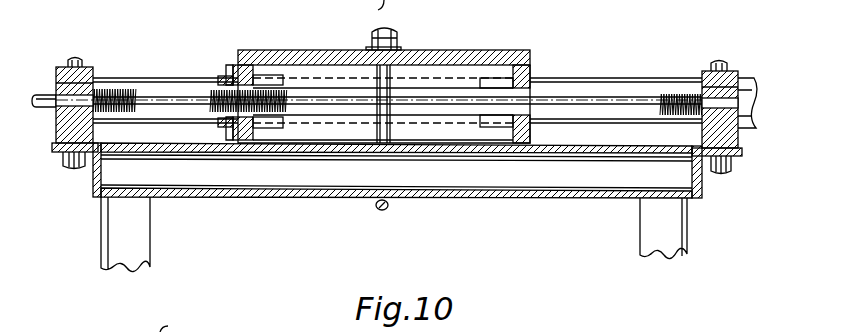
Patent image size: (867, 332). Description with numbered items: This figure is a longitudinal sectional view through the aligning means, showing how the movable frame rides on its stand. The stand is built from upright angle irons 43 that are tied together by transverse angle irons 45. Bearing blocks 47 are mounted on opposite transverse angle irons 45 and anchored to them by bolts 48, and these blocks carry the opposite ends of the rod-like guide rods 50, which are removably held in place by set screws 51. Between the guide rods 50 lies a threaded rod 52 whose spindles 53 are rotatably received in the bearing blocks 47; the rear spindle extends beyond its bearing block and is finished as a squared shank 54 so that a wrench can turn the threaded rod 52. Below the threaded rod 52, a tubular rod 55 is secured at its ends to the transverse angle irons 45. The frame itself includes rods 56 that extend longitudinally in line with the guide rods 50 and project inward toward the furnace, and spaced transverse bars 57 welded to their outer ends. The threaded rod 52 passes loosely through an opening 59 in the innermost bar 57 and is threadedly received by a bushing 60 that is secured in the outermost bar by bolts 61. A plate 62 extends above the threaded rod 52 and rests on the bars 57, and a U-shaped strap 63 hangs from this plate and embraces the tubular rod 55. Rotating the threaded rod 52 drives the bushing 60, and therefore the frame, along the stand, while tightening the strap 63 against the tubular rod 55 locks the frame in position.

The upright angle irons 43 is at (132, 247).
The transverse angle irons 45 is at (97, 185).
The bearing blocks 47 is at (60, 67).
The bolts 48 is at (67, 167).
The guide rods 50 is at (157, 80).
The set screws 51 is at (88, 57).
The threaded rod 52 is at (585, 102).
The spindles 53 is at (73, 98).
The squared shank 54 is at (38, 107).
The tubular rod 55 is at (452, 182).
The rods 56 is at (553, 78).
The transverse bars 57 is at (247, 65).
The opening 59 is at (527, 70).
The bushing 60 is at (228, 65).
The bolts 61 is at (220, 78).
The plate 62 is at (433, 53).
The U-shaped strap 63 is at (395, 38).